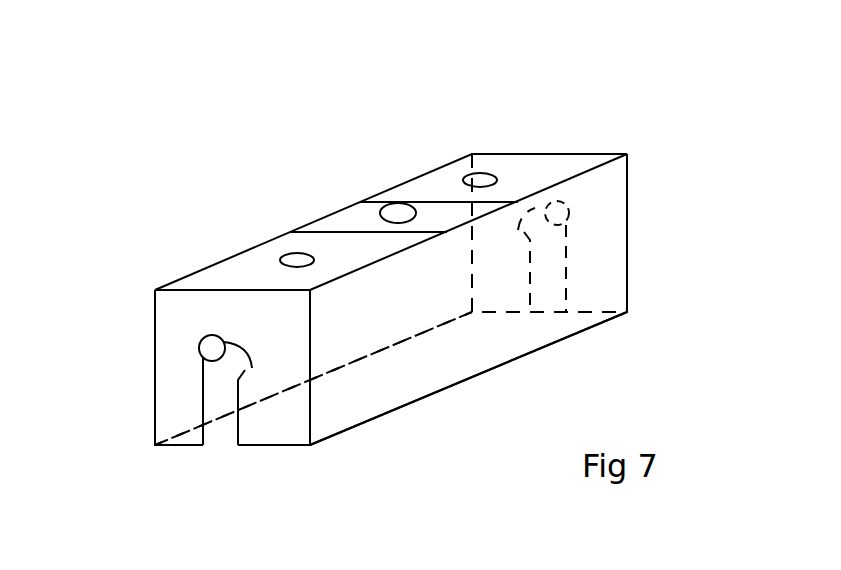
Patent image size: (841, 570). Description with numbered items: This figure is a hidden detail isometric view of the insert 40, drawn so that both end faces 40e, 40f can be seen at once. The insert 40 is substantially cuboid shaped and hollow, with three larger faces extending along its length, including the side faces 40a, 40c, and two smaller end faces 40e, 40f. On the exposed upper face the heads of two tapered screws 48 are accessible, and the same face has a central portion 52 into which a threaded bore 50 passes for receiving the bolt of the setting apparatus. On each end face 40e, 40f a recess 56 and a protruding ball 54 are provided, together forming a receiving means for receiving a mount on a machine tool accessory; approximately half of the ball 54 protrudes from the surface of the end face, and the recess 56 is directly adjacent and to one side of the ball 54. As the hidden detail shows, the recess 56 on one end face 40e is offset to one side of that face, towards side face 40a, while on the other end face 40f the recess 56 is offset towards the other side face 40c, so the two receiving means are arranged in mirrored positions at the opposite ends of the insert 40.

The insert 40 is at (543, 117).
The side face 40a is at (472, 352).
The side face 40c is at (357, 333).
The end face 40e is at (172, 393).
The end face 40f is at (628, 150).
The tapered screws 48 is at (293, 258).
The threaded bore 50 is at (397, 213).
The central portion 52 is at (337, 225).
The protruding ball 54 is at (200, 343).
The recess 56 is at (243, 363).